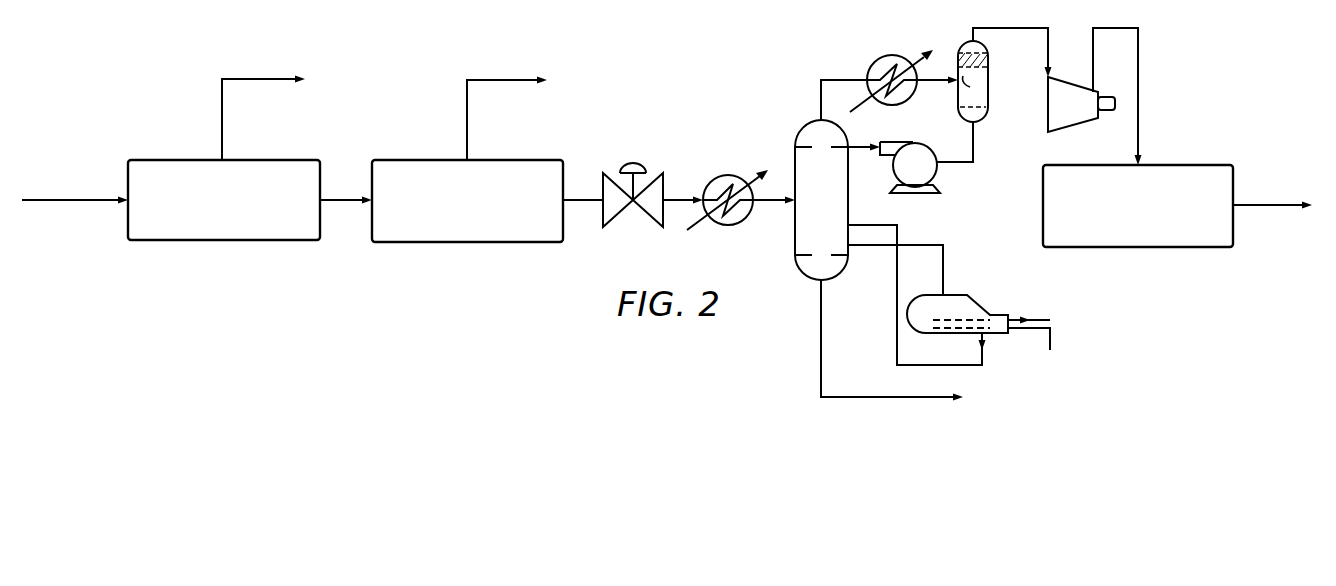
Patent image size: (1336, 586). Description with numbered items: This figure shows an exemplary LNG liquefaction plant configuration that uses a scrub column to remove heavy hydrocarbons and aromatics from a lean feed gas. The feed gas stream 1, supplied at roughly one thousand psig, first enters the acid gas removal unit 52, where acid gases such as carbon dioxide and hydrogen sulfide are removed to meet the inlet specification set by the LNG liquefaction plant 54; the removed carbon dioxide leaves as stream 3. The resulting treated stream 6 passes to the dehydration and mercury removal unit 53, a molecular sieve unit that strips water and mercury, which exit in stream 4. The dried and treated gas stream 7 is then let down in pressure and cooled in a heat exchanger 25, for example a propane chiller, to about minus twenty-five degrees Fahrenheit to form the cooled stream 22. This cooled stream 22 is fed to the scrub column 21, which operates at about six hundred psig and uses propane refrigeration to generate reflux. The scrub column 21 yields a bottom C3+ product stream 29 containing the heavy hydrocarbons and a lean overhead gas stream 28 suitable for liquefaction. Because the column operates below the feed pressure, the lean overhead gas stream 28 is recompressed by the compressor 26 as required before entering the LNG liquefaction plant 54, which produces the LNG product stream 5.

The feed gas stream 1 is at (60, 203).
The CO2 stream 3 is at (247, 81).
The water and mercury stream 4 is at (491, 83).
The LNG product stream 5 is at (1270, 207).
The treated stream 6 is at (350, 203).
The treated gas stream 7 is at (584, 203).
The scrub column 21 is at (809, 129).
The cooled stream 22 is at (770, 204).
The heat exchanger 25 is at (728, 175).
The compressor 26 is at (1058, 131).
The lean overhead gas stream 28 is at (988, 28).
The bottom C3+ product stream 29 is at (876, 399).
The acid gas removal unit 52 is at (237, 242).
The dehydration and mercury removal unit 53 is at (478, 244).
The LNG liquefaction plant 54 is at (1147, 248).